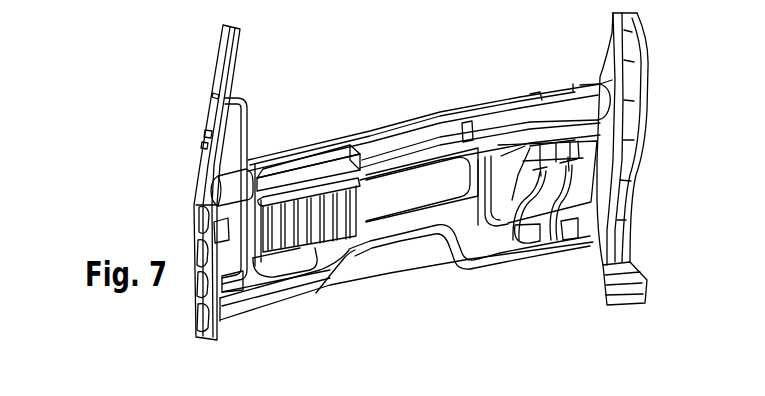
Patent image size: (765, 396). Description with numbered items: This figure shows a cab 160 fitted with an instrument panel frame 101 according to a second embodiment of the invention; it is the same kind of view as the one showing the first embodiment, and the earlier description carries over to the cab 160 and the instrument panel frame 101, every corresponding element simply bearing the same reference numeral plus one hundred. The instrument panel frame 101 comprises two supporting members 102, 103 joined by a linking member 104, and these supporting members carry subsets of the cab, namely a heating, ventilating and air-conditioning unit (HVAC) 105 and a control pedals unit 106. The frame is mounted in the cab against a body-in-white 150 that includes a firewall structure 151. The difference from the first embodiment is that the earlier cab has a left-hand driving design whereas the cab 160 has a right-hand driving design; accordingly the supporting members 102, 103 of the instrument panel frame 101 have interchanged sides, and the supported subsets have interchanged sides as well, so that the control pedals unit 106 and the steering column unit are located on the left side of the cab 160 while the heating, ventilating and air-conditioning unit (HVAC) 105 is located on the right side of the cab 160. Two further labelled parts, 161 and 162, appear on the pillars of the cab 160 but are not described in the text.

The instrument panel frame 101 is at (597, 277).
The supporting member 102 is at (497, 240).
The supporting member 103 is at (299, 275).
The linking member 104 is at (430, 161).
The heating, ventilating and air-conditioning unit (HVAC) 105 is at (312, 159).
The control pedals unit 106 is at (585, 240).
The body-in-white 150 is at (230, 63).
The firewall structure 151 is at (250, 298).
The cab 160 is at (528, 313).
The front pillar 161 is at (215, 109).
The rear pillar 162 is at (613, 30).